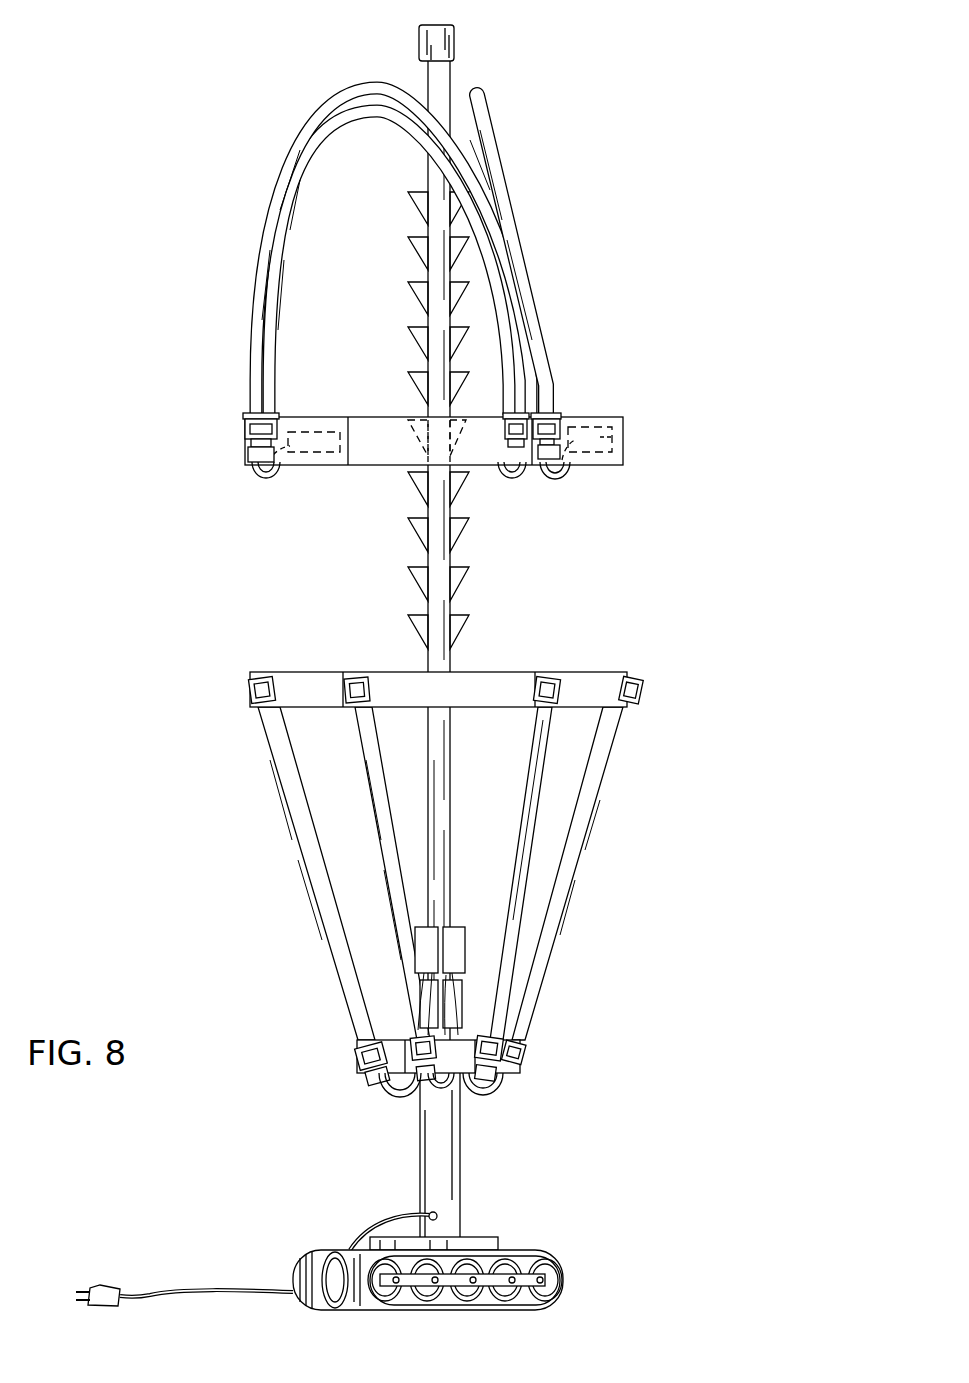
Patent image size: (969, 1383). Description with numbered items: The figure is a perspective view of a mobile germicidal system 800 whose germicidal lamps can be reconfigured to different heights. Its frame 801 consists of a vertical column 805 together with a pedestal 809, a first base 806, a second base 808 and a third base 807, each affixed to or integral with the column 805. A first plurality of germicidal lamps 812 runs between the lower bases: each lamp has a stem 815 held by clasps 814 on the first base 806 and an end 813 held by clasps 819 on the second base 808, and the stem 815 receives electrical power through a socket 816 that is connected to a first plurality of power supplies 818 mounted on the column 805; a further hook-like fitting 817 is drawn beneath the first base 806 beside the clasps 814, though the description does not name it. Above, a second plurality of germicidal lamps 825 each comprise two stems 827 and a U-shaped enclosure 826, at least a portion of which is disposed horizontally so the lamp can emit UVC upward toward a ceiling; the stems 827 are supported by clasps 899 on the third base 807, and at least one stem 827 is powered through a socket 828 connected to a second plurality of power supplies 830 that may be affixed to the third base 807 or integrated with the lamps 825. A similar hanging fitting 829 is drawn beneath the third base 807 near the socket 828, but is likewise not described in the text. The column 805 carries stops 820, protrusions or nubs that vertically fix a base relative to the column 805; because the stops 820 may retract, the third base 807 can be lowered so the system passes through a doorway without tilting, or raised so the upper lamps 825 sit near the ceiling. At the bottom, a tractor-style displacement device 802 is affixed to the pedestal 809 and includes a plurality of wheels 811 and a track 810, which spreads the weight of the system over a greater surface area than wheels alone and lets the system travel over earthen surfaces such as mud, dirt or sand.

The mobile germicidal system 800 is at (658, 67).
The frame 801 is at (398, 549).
The column 805 is at (446, 611).
The stops 820 is at (456, 579).
The third base 807 is at (486, 413).
The second plurality of germicidal lamps 825 is at (522, 236).
The enclosure 826 is at (534, 291).
The stems 827 is at (553, 445).
The socket 828 is at (567, 430).
The second plurality of power supplies 830 is at (613, 437).
The hook 829 is at (556, 478).
The clasps 899 is at (262, 415).
The second base 808 is at (500, 672).
The clasps 819 is at (548, 676).
The end 813 is at (631, 672).
The first plurality of germicidal lamps 812 is at (586, 886).
The first plurality of power supplies 818 is at (463, 1005).
The first base 806 is at (395, 1040).
The stem 815 is at (362, 1040).
The socket 816 is at (505, 1079).
The clasps 814 is at (370, 1090).
The center hook with cable 817 is at (402, 1100).
The displacement device 802 is at (370, 1316).
The track 810 is at (568, 1262).
The pedestal 809 is at (461, 1258).
The wheels 811 is at (540, 1258).